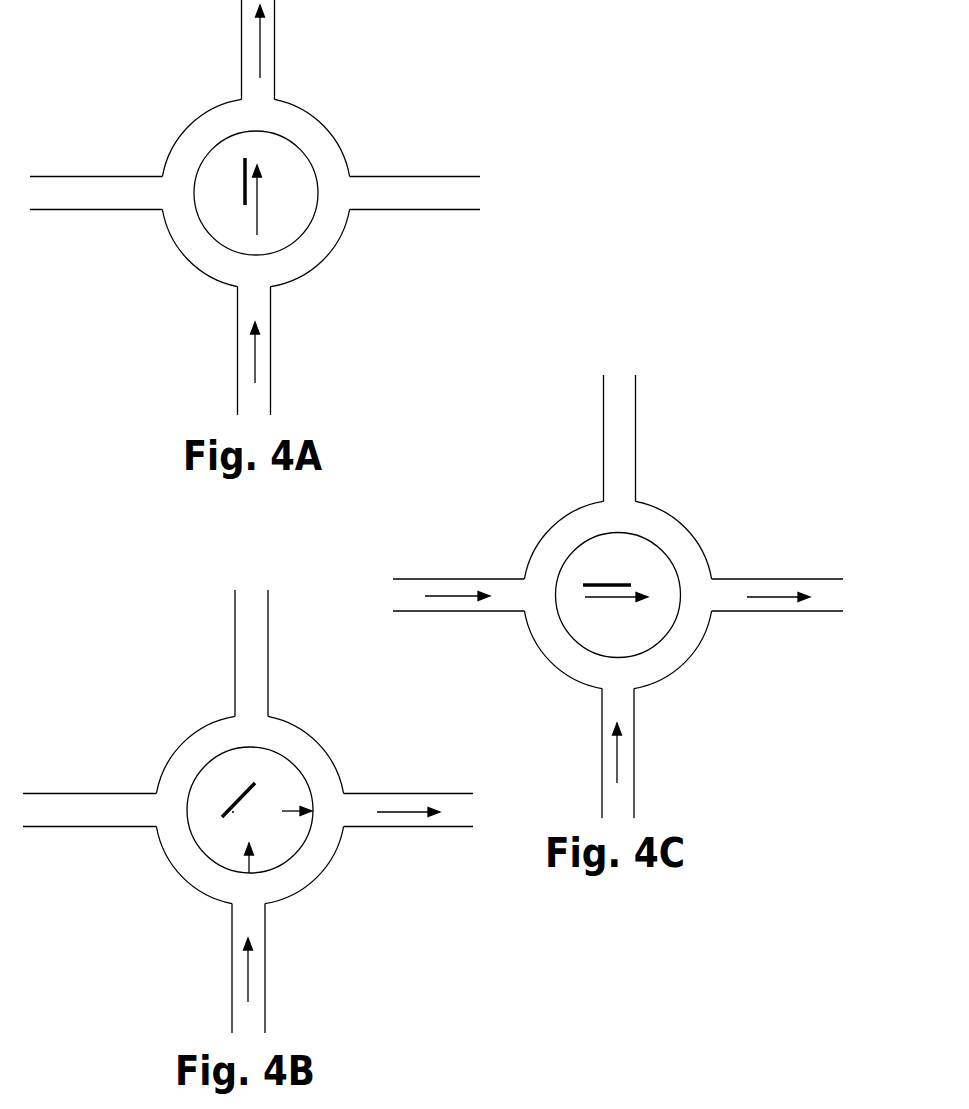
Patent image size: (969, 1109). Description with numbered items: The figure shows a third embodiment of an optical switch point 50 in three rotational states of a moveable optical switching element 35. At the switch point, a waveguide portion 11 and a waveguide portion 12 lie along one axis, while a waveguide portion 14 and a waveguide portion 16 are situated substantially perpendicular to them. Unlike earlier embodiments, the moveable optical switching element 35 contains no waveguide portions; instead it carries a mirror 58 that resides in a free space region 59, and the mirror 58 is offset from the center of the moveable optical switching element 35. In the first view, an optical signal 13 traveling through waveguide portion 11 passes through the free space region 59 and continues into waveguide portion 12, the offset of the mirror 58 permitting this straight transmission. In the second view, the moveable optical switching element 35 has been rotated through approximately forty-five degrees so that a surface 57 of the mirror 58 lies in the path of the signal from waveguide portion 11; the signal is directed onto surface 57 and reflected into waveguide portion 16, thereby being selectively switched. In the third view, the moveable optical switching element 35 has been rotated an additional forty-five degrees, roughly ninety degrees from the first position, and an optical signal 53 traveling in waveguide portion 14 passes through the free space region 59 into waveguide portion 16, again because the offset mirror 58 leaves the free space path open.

In FIG. 4A, the optical switch point 50 is at (143, 29).
In FIG. 4B, the optical switch point 50 is at (135, 638).
In FIG. 4C, the optical switch point 50 is at (543, 453).
In FIG. 4A, the waveguide portion 11 is at (273, 312).
In FIG. 4B, the waveguide portion 11 is at (265, 922).
In FIG. 4C, the waveguide portion 11 is at (633, 707).
In FIG. 4A, the waveguide portion 12 is at (278, 3).
In FIG. 4B, the waveguide portion 12 is at (268, 613).
In FIG. 4C, the waveguide portion 12 is at (636, 397).
In FIG. 4A, the optical signal 13 is at (255, 355).
In FIG. 4B, the optical signal 13 is at (248, 965).
In FIG. 4C, the optical signal 13 is at (617, 750).
In FIG. 4A, the waveguide portion 14 is at (98, 209).
In FIG. 4B, the waveguide portion 14 is at (107, 827).
In FIG. 4C, the waveguide portion 14 is at (458, 612).
In FIG. 4A, the waveguide portion 16 is at (395, 210).
In FIG. 4B, the waveguide portion 16 is at (380, 828).
In FIG. 4C, the waveguide portion 16 is at (775, 613).
In FIG. 4A, the moveable optical switching element 35 is at (218, 137).
In FIG. 4B, the moveable optical switching element 35 is at (218, 752).
In FIG. 4C, the moveable optical switching element 35 is at (583, 537).
In FIG. 4C, the optical signal 53 is at (450, 593).
In FIG. 4B, the surface 57 is at (233, 815).
In FIG. 4A, the mirror 58 is at (243, 172).
In FIG. 4B, the mirror 58 is at (252, 785).
In FIG. 4C, the mirror 58 is at (587, 583).
In FIG. 4A, the free space region 59 is at (290, 163).
In FIG. 4B, the free space region 59 is at (270, 783).
In FIG. 4C, the free space region 59 is at (600, 623).